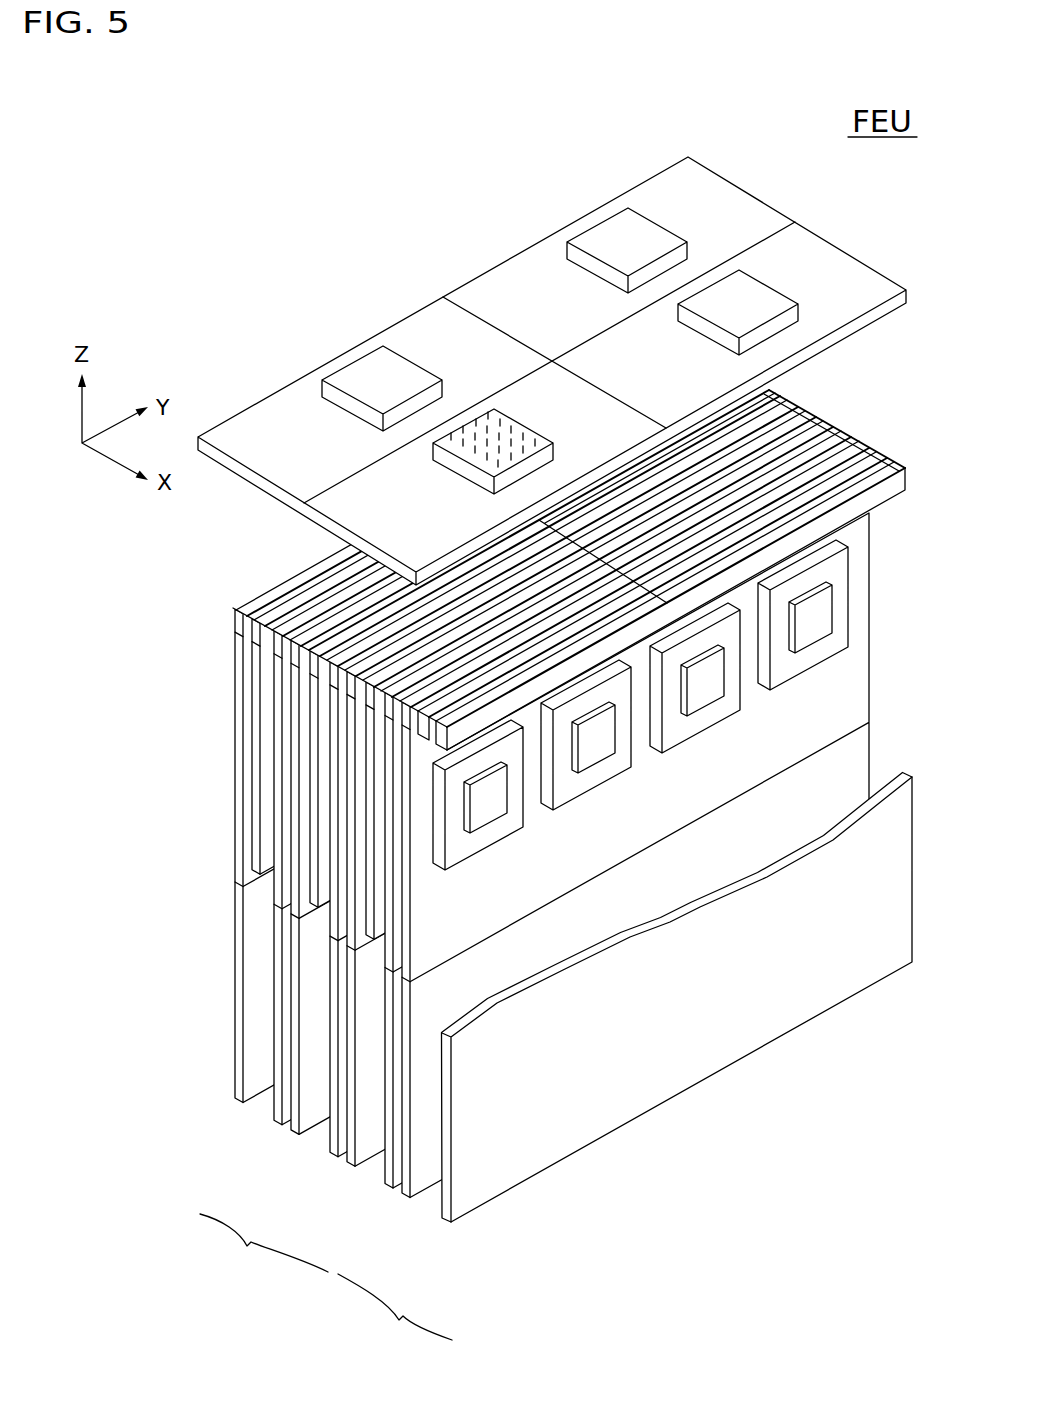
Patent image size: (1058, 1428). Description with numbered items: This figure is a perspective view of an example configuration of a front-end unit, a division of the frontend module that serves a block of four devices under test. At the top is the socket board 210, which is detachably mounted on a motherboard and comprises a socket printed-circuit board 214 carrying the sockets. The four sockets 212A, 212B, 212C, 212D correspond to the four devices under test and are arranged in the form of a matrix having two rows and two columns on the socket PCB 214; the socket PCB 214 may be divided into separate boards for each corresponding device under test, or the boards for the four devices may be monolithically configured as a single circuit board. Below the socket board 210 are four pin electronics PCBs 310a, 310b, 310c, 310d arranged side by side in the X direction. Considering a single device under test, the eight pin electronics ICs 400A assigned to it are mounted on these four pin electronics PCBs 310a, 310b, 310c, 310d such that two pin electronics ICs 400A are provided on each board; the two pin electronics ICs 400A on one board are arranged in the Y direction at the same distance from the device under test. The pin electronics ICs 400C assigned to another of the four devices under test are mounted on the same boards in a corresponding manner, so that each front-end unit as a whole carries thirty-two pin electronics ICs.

The socket board 210 is at (552, 326).
The socket 212A is at (478, 473).
The socket 212B is at (373, 371).
The socket 212C is at (748, 296).
The socket 212D is at (620, 233).
The socket printed-circuit board 214 is at (810, 240).
The pin electronics PCB 310a is at (442, 1221).
The pin electronics PCB 310b is at (398, 1196).
The pin electronics PCB 310c is at (388, 1182).
The pin electronics PCB 310d is at (345, 1162).
The pin electronics IC 400A is at (488, 818).
The pin electronics IC 400C is at (707, 692).